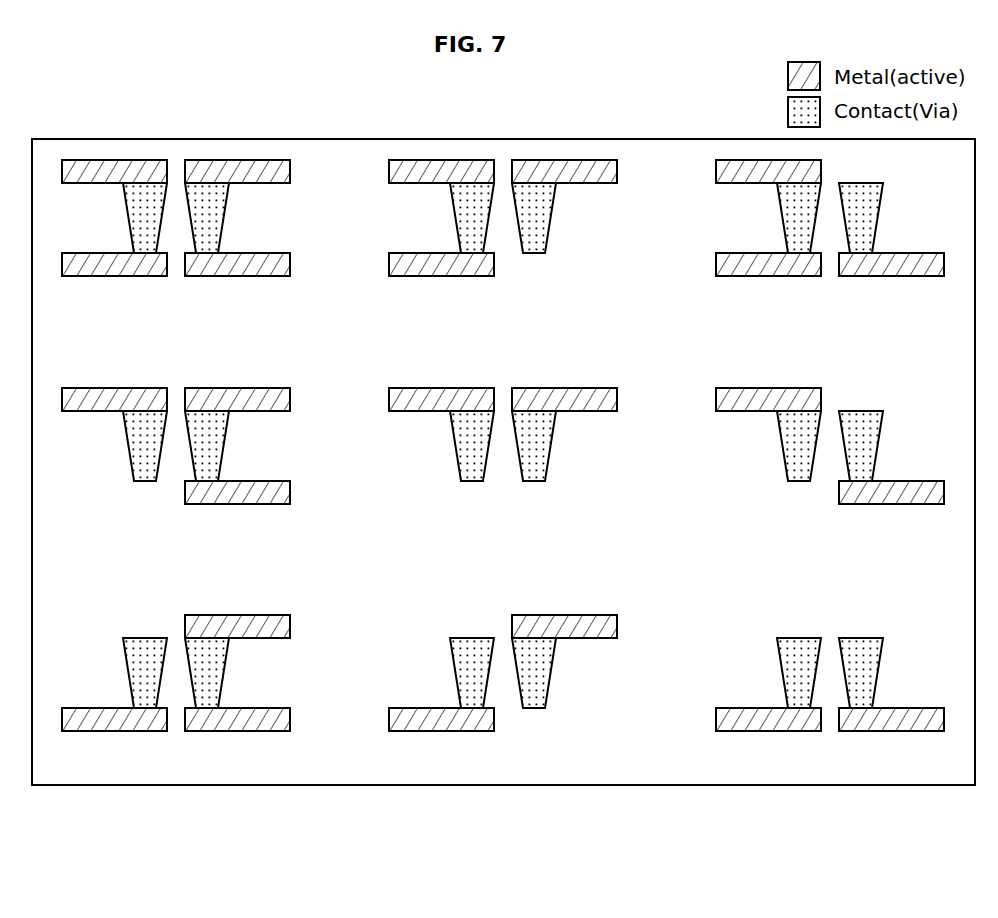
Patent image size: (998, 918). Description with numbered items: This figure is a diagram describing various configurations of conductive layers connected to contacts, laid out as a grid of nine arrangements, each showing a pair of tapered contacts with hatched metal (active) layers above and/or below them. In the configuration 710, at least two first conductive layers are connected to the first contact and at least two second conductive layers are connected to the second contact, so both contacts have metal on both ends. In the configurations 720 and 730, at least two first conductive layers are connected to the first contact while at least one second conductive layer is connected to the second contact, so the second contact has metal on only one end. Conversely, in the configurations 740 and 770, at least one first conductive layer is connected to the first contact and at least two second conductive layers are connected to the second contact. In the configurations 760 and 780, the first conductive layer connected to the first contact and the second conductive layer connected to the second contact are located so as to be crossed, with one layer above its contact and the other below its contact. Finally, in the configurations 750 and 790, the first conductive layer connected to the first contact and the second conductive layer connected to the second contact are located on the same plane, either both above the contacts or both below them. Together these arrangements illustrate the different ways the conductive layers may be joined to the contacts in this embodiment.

The configuration 710 is at (176, 237).
The configuration 720 is at (503, 237).
The configuration 730 is at (830, 237).
The configuration 740 is at (176, 465).
The configuration 750 is at (503, 465).
The configuration 760 is at (830, 465).
The configuration 770 is at (176, 692).
The configuration 780 is at (503, 692).
The configuration 790 is at (830, 704).